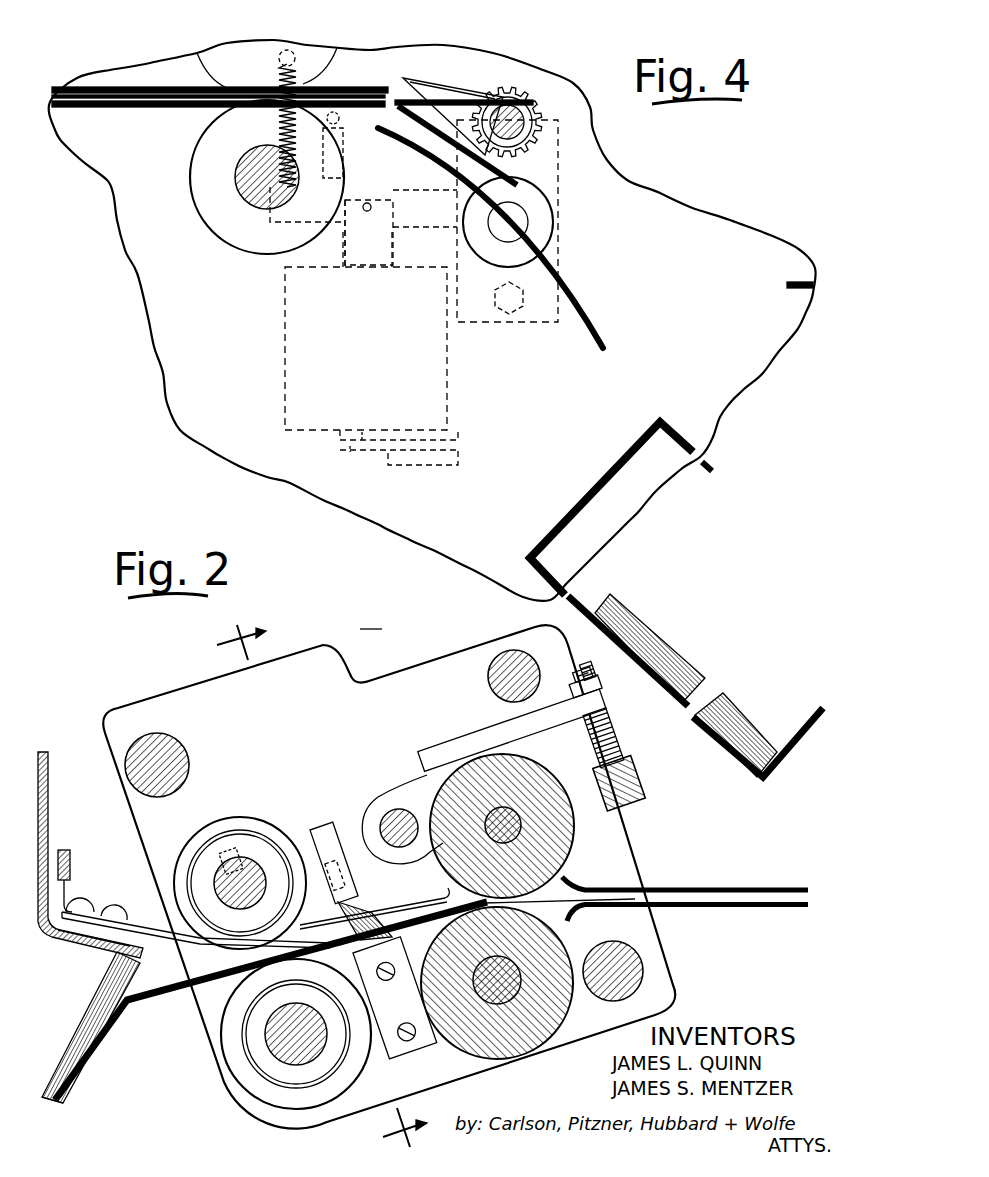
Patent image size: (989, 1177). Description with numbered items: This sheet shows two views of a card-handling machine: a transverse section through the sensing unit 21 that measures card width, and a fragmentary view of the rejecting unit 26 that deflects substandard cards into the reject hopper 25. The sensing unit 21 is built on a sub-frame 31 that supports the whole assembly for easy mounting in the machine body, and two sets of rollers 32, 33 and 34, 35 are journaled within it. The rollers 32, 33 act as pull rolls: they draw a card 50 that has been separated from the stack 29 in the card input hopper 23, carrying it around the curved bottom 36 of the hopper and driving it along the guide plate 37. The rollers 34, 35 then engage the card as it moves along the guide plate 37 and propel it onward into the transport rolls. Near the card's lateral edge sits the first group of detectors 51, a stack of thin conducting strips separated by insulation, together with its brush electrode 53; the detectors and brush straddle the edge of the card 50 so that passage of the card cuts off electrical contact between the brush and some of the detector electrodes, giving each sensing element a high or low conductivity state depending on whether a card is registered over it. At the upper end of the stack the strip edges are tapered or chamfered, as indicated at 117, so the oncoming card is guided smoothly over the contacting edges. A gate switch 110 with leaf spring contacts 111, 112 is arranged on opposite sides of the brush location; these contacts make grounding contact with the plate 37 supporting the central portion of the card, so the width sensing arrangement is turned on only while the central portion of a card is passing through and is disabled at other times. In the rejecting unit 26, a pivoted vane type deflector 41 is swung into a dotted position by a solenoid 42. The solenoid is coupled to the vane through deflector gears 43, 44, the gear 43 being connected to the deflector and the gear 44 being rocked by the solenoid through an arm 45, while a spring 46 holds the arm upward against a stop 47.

In FIG. 4, the rejecting unit 26 is at (495, 39).
In FIG. 4, the card 50 is at (393, 93).
In FIG. 2, the card 50 is at (573, 880).
In FIG. 4, the pivoted vane type deflector 41 is at (476, 95).
In FIG. 4, the deflector gear 43 is at (533, 112).
In FIG. 4, the deflector gear 44 is at (540, 150).
In FIG. 4, the arm 45 is at (383, 192).
In FIG. 4, the spring 46 is at (274, 128).
In FIG. 4, the stop 47 is at (356, 168).
In FIG. 4, the solenoid 42 is at (284, 354).
In FIG. 4, the reject hopper 25 is at (658, 684).
In FIG. 2, the sensing unit 21 is at (312, 880).
In FIG. 2, the sub-frame 31 is at (400, 670).
In FIG. 2, the roller 32 is at (247, 814).
In FIG. 2, the roller 33 is at (228, 1072).
In FIG. 2, the roller 34 is at (527, 760).
In FIG. 2, the roller 35 is at (568, 942).
In FIG. 2, the first group of detectors 51 is at (384, 1060).
In FIG. 2, the brush electrode 53 is at (367, 900).
In FIG. 2, the leaf spring contact 112 is at (407, 910).
In FIG. 2, the gate switch 110 is at (186, 953).
In FIG. 2, the leaf spring contact 111 is at (218, 950).
In FIG. 2, the tapered edges 117 is at (348, 963).
In FIG. 2, the stack 29 is at (80, 1028).
In FIG. 2, the guide plate 37 is at (212, 990).
In FIG. 2, the curved bottom 36 is at (123, 1022).
In FIG. 2, the card input hopper 23 is at (67, 1102).